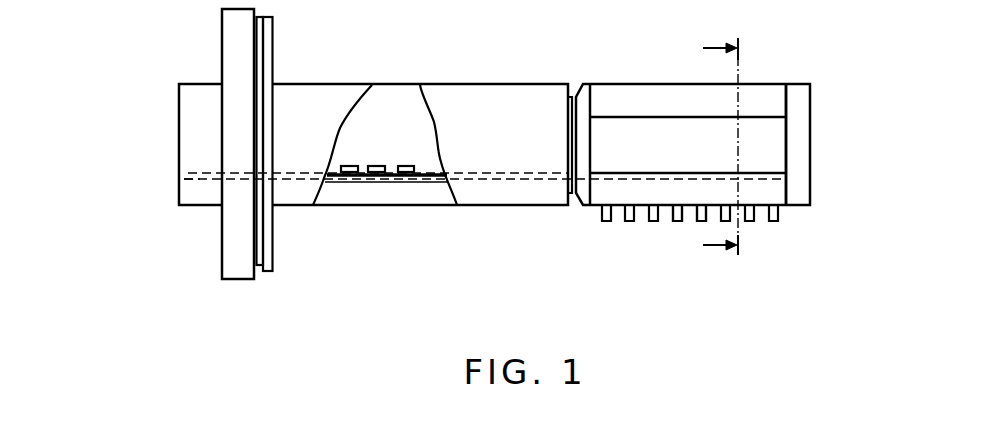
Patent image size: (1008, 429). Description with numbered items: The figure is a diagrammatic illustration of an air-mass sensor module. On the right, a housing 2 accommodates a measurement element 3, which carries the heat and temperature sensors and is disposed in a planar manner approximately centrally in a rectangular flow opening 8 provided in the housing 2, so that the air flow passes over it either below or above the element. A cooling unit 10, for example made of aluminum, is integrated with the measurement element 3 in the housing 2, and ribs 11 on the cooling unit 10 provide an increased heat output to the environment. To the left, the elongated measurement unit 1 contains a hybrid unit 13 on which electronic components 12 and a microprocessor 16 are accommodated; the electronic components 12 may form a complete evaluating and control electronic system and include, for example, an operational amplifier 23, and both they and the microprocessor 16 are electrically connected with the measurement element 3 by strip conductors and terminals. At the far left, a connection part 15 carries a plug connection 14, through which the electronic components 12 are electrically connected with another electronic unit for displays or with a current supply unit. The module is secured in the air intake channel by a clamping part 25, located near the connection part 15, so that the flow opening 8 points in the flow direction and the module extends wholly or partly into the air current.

The measurement unit 1 is at (499, 62).
The housing 2 is at (660, 102).
The measurement element 3 is at (673, 172).
The flow opening 8 is at (763, 138).
The cooling unit 10 is at (668, 223).
The ribs 11 is at (697, 222).
The electronic components 12 is at (377, 165).
The hybrid unit 13 is at (337, 205).
The plug connection 14 is at (192, 180).
The connection part 15 is at (172, 132).
The microprocessor 16 is at (346, 166).
The operational amplifier 23 is at (393, 205).
The clamping part 25 is at (257, 266).